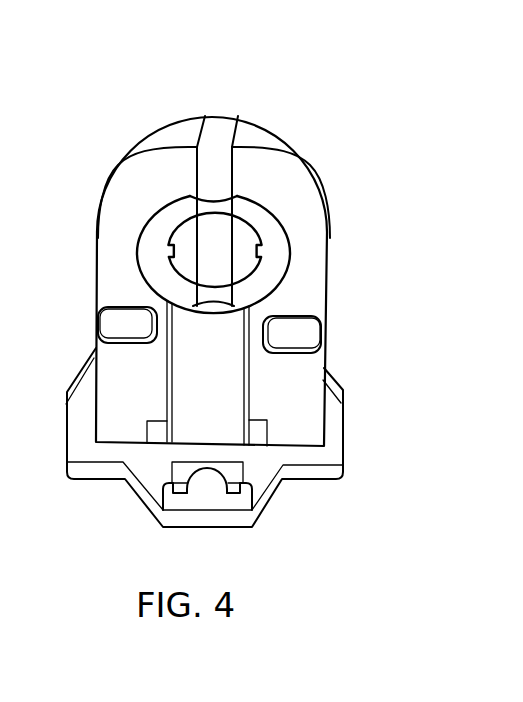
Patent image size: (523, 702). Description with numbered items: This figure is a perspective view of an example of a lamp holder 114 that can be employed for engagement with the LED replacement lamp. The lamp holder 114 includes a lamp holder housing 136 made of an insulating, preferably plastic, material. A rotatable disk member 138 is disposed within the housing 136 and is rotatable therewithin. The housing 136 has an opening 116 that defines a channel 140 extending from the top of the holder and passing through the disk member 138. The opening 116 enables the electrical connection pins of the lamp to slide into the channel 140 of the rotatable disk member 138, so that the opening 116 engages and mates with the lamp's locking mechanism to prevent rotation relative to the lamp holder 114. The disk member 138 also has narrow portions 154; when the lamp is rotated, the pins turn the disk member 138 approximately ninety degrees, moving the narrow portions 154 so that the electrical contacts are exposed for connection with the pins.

The lamp holder 114 is at (148, 66).
The opening 116 is at (218, 133).
The lamp holder housing 136 is at (287, 143).
The rotatable disk member 138 is at (148, 255).
The channel 140 is at (212, 237).
The narrow portions 154 is at (213, 197).